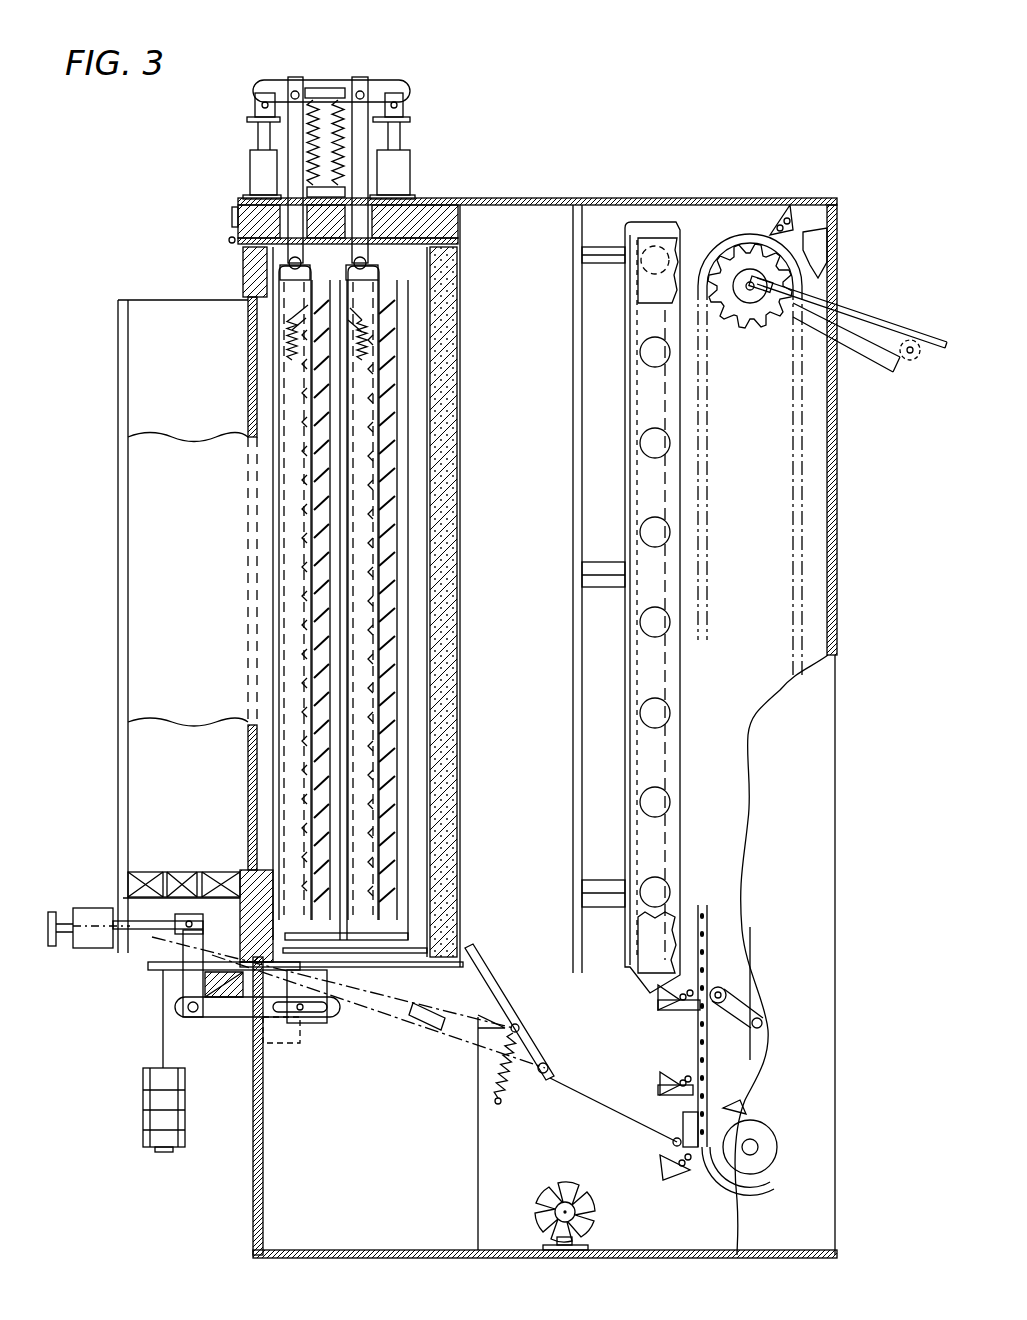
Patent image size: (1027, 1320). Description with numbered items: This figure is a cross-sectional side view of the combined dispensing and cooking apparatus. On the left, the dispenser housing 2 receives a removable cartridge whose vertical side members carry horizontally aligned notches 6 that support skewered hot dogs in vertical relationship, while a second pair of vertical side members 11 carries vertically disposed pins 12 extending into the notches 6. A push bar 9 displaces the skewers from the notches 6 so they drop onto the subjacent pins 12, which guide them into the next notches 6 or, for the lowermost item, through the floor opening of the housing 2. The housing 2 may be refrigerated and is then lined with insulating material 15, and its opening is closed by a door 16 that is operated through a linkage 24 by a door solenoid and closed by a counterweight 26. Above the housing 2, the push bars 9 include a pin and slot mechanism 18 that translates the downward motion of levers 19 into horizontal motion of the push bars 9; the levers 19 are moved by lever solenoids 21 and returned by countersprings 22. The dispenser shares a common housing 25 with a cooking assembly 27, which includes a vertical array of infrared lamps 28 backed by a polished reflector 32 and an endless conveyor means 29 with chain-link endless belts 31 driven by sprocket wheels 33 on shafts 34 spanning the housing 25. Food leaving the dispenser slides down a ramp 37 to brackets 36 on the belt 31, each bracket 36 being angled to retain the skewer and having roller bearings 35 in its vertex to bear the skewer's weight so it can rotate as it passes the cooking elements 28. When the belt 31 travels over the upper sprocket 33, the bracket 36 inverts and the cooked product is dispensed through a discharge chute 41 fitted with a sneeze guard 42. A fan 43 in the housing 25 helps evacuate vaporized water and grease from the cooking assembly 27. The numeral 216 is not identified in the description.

The housing 2 is at (460, 380).
The notches 6 is at (375, 300).
The push bar 9 is at (290, 515).
The second pair of vertical side members 11 is at (403, 292).
The pins 12 is at (387, 340).
The insulating material 15 is at (447, 300).
The door 16 is at (383, 1012).
The pin and slot mechanism 18 is at (283, 337).
The levers 19 is at (365, 110).
The lever solenoids 21 is at (258, 170).
The countersprings 22 is at (333, 100).
The linkage 24 is at (225, 1007).
The common housing 25 is at (563, 200).
The counterweight 26 is at (790, 208).
The cooking assembly 27 is at (732, 622).
The infrared lamps 28 is at (672, 437).
The endless conveyor means 29 is at (720, 737).
The endless belts 31 is at (697, 1042).
The polished reflector 32 is at (628, 402).
The sprocket wheels 33 is at (723, 263).
The shafts 34 is at (745, 283).
The roller bearings 35 is at (690, 1180).
The brackets 36 is at (658, 1008).
The ramp 37 is at (568, 1075).
The discharge chute 41 is at (870, 350).
The sneeze guard 42 is at (847, 283).
The fan 43 is at (583, 1192).
The handwheel 216 is at (93, 908).